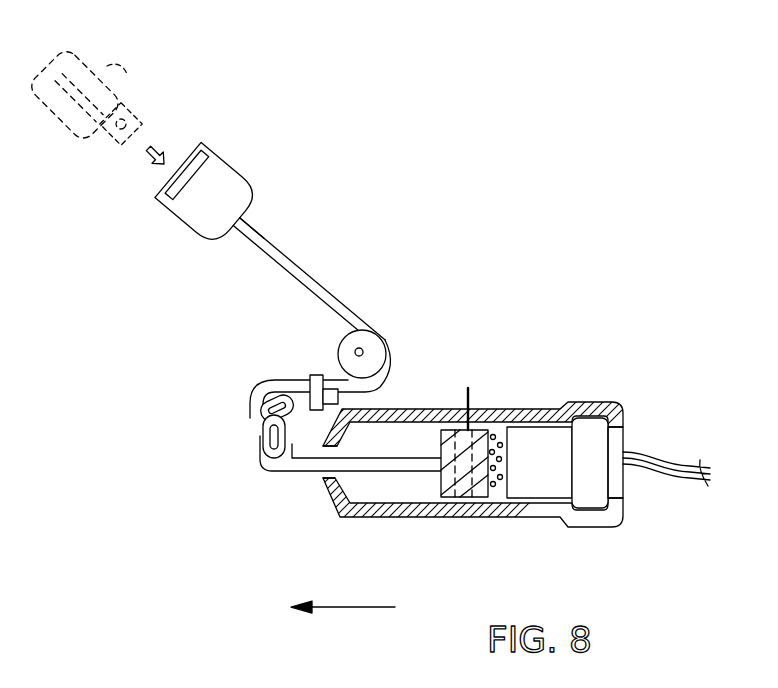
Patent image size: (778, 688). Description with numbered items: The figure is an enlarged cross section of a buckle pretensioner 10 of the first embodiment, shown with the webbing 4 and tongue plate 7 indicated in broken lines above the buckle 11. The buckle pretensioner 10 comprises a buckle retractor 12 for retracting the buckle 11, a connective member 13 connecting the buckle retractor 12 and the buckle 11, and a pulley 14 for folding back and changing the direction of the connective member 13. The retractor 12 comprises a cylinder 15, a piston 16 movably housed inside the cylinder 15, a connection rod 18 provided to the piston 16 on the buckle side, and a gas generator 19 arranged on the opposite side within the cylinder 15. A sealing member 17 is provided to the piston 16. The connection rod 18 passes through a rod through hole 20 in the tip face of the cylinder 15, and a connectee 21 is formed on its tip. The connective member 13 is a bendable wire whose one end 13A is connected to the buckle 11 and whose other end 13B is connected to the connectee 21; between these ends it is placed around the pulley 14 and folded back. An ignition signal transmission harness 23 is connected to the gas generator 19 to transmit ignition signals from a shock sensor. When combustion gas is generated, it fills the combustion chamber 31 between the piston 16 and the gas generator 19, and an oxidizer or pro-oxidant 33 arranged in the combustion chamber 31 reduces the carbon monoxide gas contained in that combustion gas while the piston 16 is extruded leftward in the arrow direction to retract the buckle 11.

The webbing 4 is at (82, 60).
The tongue plate 7 is at (128, 82).
The buckle pretensioner 10 is at (440, 204).
The buckle 11 is at (200, 214).
The buckle retractor 12 is at (570, 300).
The connective member 13 is at (311, 277).
The one end of connective member 13A is at (260, 231).
The other end of connective member 13B is at (250, 403).
The pulley 14 is at (366, 348).
The cylinder 15 is at (540, 510).
The piston 16 is at (482, 490).
The sealing member 17 is at (471, 393).
The connection rod 18 is at (398, 465).
The gas generator 19 is at (595, 438).
The rod through hole 20 is at (318, 479).
The connectee 21 is at (264, 457).
The ignition signal transmission harness 23 is at (662, 460).
The combustion chamber 31 is at (500, 492).
The oxidizer or pro-oxidant 33 is at (494, 434).